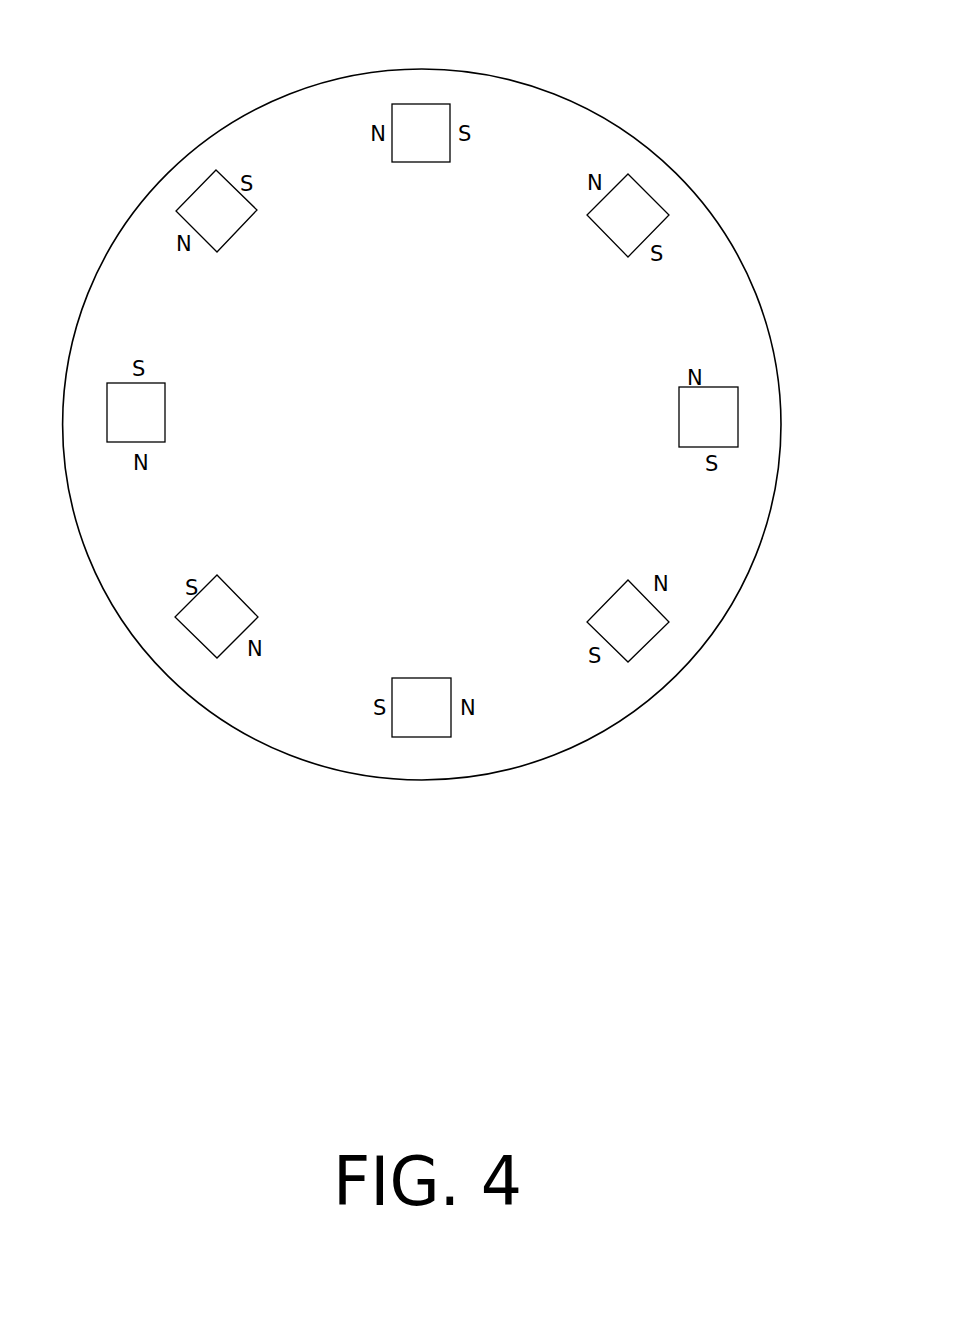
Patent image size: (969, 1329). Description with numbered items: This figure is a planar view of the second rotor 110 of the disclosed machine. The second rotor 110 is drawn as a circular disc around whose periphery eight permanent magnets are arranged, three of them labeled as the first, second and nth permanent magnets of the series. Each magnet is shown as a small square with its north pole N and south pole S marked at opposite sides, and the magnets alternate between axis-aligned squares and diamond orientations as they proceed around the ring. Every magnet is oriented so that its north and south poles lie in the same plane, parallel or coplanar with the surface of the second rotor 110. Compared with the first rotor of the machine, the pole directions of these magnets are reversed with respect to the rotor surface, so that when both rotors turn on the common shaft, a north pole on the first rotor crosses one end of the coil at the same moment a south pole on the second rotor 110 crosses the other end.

The second rotor 110 is at (153, 192).